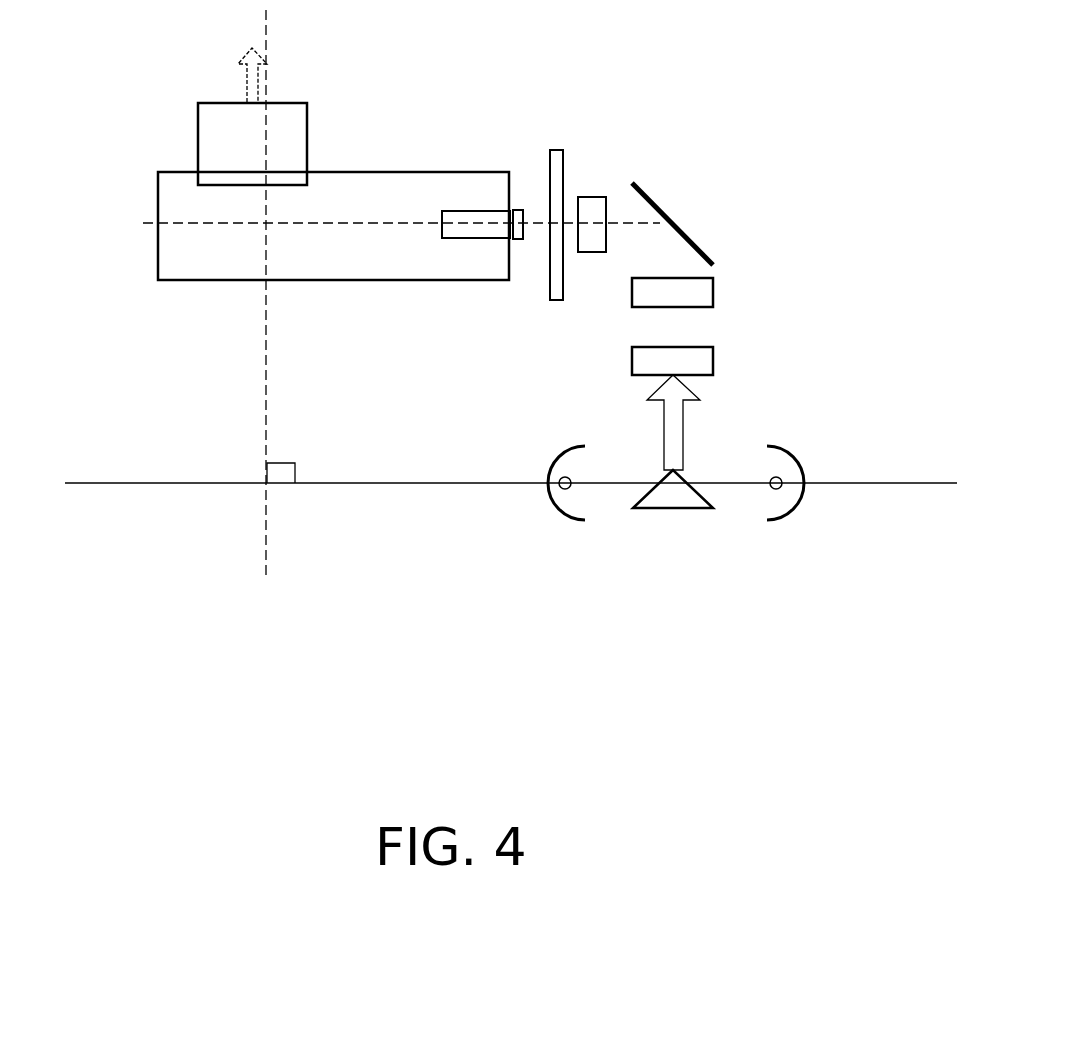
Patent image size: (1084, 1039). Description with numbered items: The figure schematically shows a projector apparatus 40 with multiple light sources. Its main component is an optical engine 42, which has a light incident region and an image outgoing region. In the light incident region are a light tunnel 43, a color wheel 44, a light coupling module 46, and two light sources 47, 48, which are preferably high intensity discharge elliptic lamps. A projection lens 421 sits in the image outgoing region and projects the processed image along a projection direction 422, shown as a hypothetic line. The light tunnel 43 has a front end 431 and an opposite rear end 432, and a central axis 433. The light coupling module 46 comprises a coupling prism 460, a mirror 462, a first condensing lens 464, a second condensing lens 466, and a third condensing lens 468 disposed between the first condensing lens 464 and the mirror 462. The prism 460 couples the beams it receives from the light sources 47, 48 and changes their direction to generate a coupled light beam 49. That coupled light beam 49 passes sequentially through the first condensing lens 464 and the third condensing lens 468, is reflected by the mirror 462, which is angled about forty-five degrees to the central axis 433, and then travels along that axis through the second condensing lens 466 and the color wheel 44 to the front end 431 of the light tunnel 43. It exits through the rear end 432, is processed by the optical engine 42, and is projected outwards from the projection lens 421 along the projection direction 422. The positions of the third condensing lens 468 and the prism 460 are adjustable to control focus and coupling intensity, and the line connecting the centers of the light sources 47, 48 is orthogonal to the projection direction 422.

The projector apparatus 40 is at (207, 628).
The optical engine 42 is at (258, 315).
The projection lens 421 is at (197, 145).
The projection direction 422 is at (247, 90).
The light tunnel 43 is at (470, 240).
The front end 431 is at (520, 196).
The rear end 432 is at (441, 196).
The central axis 433 is at (363, 224).
The color wheel 44 is at (553, 150).
The light coupling module 46 is at (772, 122).
The coupling prism 460 is at (680, 513).
The mirror 462 is at (700, 243).
The first condensing lens 464 is at (713, 362).
The second condensing lens 466 is at (590, 193).
The third condensing lens 468 is at (713, 293).
The light source 47 is at (550, 503).
The light source 48 is at (810, 493).
The coupled light beam 49 is at (663, 425).